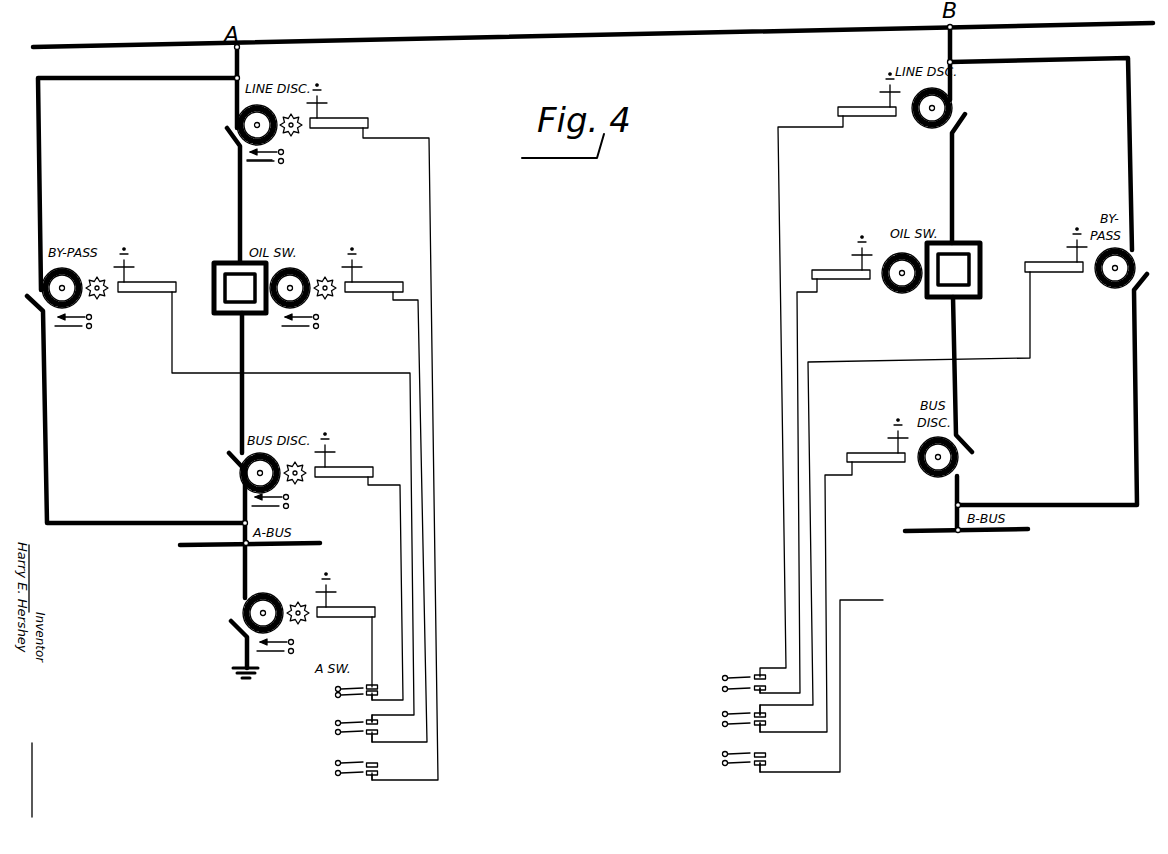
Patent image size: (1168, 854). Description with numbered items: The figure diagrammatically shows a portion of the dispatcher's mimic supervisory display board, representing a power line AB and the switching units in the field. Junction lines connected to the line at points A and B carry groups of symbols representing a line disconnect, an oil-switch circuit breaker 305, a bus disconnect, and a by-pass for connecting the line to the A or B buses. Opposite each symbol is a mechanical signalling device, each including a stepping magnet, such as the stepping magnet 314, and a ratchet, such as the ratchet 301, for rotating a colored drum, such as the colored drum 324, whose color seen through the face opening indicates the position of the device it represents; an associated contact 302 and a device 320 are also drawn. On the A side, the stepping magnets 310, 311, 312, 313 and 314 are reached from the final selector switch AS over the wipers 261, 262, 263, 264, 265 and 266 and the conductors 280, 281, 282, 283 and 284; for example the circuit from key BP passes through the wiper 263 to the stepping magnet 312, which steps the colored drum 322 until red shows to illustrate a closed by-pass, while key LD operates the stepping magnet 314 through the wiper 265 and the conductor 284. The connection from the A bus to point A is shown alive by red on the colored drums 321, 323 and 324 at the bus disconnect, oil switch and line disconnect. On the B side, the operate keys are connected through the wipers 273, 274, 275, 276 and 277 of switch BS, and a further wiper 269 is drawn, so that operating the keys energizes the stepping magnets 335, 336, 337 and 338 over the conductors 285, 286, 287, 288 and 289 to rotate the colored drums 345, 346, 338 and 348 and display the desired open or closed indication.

The ratchet 301 is at (292, 134).
The colored drum 324 is at (262, 143).
The auxiliary switch contact 302 is at (281, 163).
The stepping magnet 314 is at (333, 118).
The stepping magnet 312 is at (135, 282).
The colored drum 322 is at (73, 306).
The stepping magnet 313 is at (378, 266).
The colored drum 323 is at (306, 300).
The oil switch 305 is at (250, 313).
The stepping magnet 311 is at (337, 467).
The colored drum 321 is at (283, 485).
The grounding switch operating motor 320 is at (262, 594).
The stepping magnet 310 is at (338, 607).
The conductor 280 is at (372, 641).
The wiper 261 is at (335, 689).
The wiper 262 is at (335, 697).
The wiper 263 is at (335, 723).
The wiper 264 is at (335, 733).
The wiper 266 is at (335, 764).
The wiper 265 is at (335, 774).
The conductor 281 is at (404, 668).
The conductor 282 is at (415, 688).
The conductor 283 is at (428, 708).
The conductor 284 is at (439, 730).
The stepping magnet 335 is at (870, 107).
The colored drum 345 is at (923, 128).
The conductor 285 is at (831, 128).
The stepping magnet 336 is at (843, 270).
The colored drum 346 is at (900, 293).
The conductor 286 is at (800, 293).
The stepping magnet 337 is at (1050, 262).
The stepping magnet 338 is at (1103, 288).
The conductor 287 is at (826, 364).
The colored drum 348 is at (935, 477).
The conductor 288 is at (827, 477).
The conductor 289 is at (853, 602).
The wiper 273 is at (722, 679).
The wiper 274 is at (722, 690).
The wiper 275 is at (722, 714).
The wiper 276 is at (722, 724).
The selector switch contact 269 is at (722, 754).
The wiper 277 is at (722, 763).